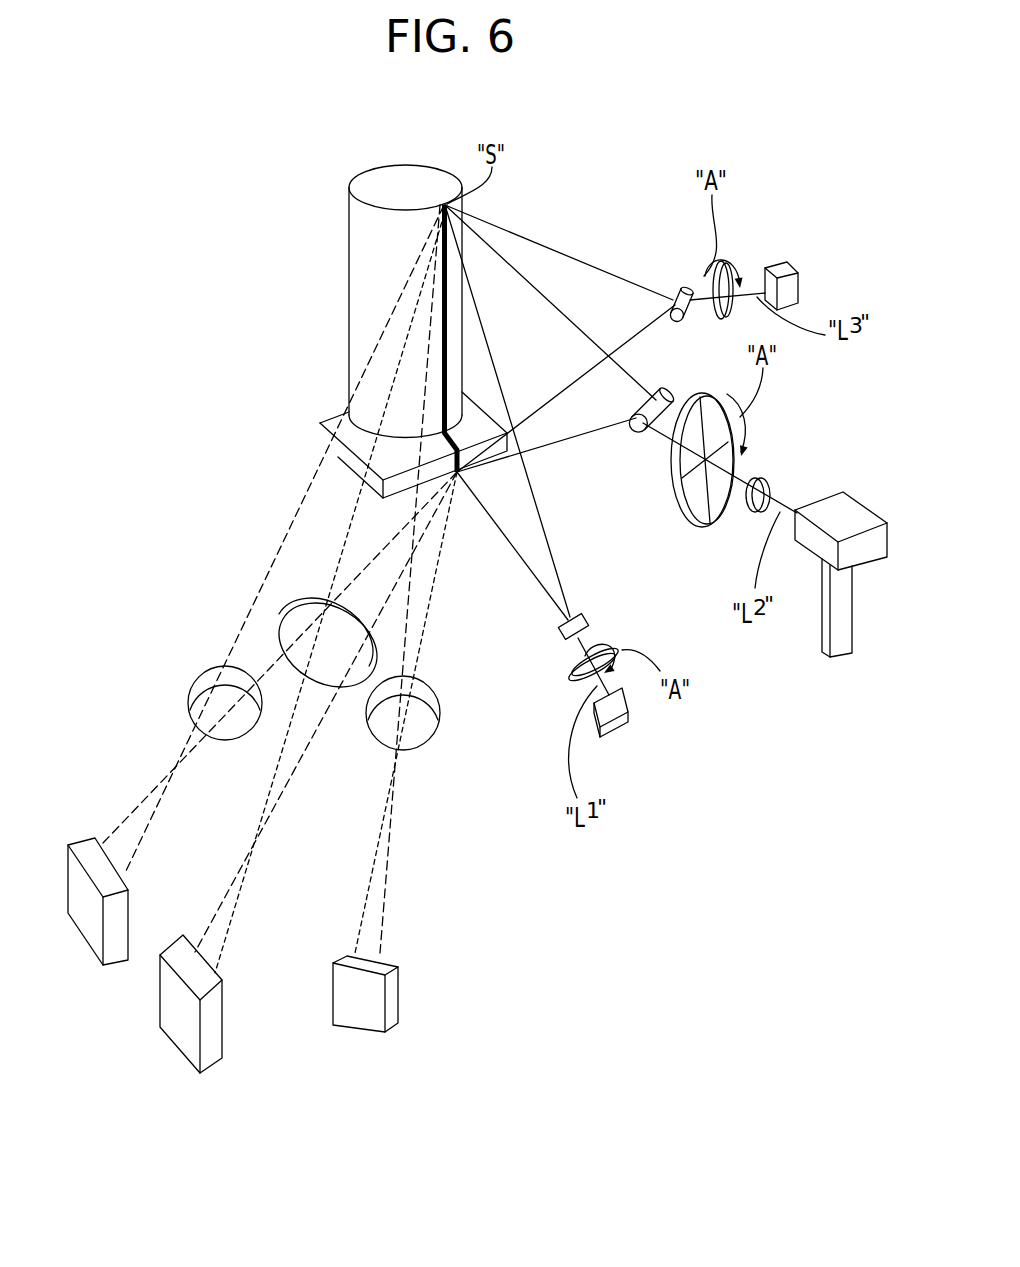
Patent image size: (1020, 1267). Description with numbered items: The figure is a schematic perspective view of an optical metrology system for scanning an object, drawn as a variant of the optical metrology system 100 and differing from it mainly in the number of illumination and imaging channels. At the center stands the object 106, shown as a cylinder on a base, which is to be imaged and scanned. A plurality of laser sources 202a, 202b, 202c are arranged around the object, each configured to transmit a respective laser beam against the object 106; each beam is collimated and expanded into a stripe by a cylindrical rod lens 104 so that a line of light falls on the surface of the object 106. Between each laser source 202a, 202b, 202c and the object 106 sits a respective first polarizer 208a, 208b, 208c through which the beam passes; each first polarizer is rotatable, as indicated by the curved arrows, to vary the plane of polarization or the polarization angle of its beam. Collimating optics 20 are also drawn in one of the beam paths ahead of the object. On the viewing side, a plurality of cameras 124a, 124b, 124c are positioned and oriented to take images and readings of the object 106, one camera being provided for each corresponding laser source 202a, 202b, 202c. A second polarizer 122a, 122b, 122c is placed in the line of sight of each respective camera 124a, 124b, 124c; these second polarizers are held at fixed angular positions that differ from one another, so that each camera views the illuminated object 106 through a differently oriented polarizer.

The optical metrology system 100 is at (250, 229).
The object 106 is at (349, 303).
The cylindrical rod lens 104 is at (678, 290).
The first polarizer 208a is at (570, 672).
The first polarizer 208b is at (685, 522).
The first polarizer 208c is at (733, 262).
The laser source 202a is at (620, 725).
The laser source 202b is at (813, 543).
The laser source 202c is at (798, 288).
The collimating optics 20 is at (768, 480).
The second polarizer 122a is at (190, 688).
The second polarizer 122b is at (303, 600).
The second polarizer 122c is at (420, 725).
The camera 124a is at (87, 932).
The camera 124b is at (213, 1025).
The camera 124c is at (357, 1022).